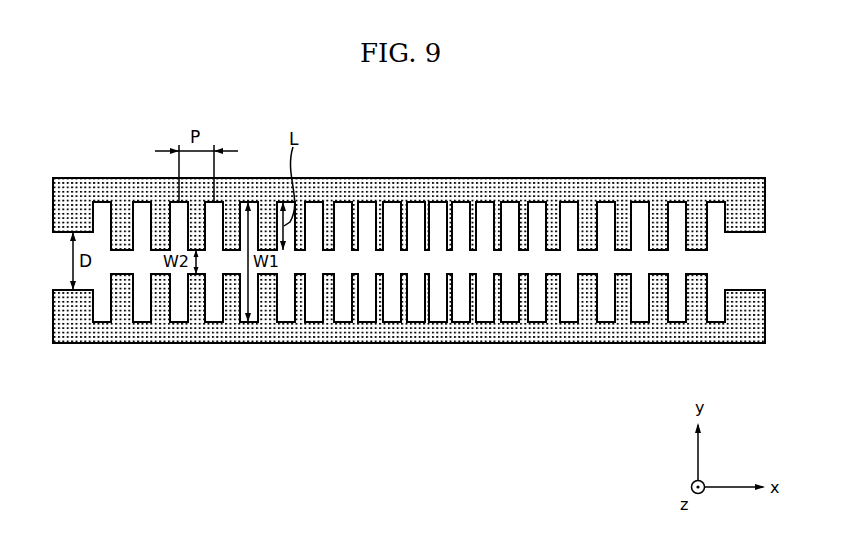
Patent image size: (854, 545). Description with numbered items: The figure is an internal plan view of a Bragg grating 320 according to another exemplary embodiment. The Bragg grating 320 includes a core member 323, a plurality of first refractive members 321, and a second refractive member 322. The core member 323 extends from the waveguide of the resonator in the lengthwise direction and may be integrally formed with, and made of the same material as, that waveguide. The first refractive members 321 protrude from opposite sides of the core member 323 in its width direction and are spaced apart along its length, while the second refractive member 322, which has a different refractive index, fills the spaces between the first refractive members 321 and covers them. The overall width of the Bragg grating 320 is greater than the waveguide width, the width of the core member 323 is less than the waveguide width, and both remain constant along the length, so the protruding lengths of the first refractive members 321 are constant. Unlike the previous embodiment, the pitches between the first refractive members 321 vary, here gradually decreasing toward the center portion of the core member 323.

The Bragg grating 320 is at (703, 160).
The first refractive members 321 is at (312, 317).
The second refractive member 322 is at (377, 315).
The core member 323 is at (440, 258).